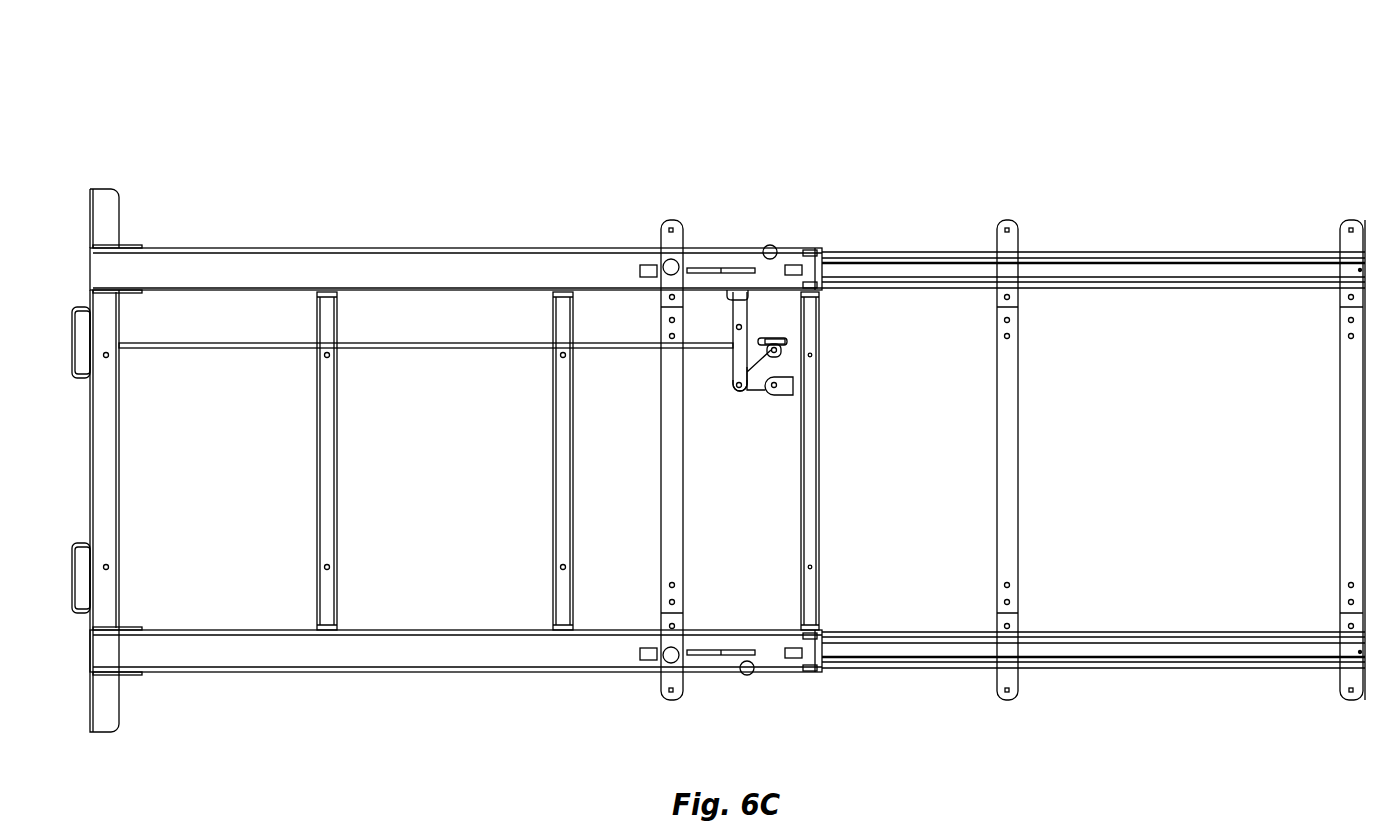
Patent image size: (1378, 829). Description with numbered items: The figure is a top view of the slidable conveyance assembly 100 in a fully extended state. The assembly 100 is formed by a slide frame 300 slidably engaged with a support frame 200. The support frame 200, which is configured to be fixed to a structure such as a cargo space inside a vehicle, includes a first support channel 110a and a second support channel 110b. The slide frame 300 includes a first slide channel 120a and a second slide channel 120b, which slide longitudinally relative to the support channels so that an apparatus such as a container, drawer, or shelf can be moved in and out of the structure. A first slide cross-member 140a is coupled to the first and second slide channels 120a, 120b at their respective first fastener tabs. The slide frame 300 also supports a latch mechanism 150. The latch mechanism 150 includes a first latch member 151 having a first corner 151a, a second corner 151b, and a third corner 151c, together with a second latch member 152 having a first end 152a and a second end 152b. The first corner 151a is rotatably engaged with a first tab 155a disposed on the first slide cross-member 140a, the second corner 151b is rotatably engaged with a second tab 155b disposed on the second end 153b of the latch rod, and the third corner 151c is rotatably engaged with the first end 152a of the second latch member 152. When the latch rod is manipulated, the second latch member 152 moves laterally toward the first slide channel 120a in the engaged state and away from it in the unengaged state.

The slidable conveyance assembly 100 is at (1296, 112).
The first slide channel 120a is at (322, 256).
The second slide channel 120b is at (322, 665).
The slide frame 300 is at (460, 256).
The second end of the second latch member 152b is at (742, 292).
The first support channel 110a is at (1098, 257).
The second support channel 110b is at (1098, 665).
The support frame 200 is at (1238, 257).
The second end of the latch rod 153b is at (737, 327).
The second tab 155b is at (776, 348).
The second latch member 152 is at (741, 367).
The second corner of the first latch member 151b is at (778, 353).
The third corner of the first latch member 151c is at (740, 389).
The first tab 155a is at (793, 386).
The first end of the second latch member 152a is at (748, 392).
The first corner of the first latch member 151a is at (777, 388).
The first latch member 151 is at (760, 388).
The latch mechanism 150 is at (782, 336).
The first slide cross-member 140a is at (812, 492).